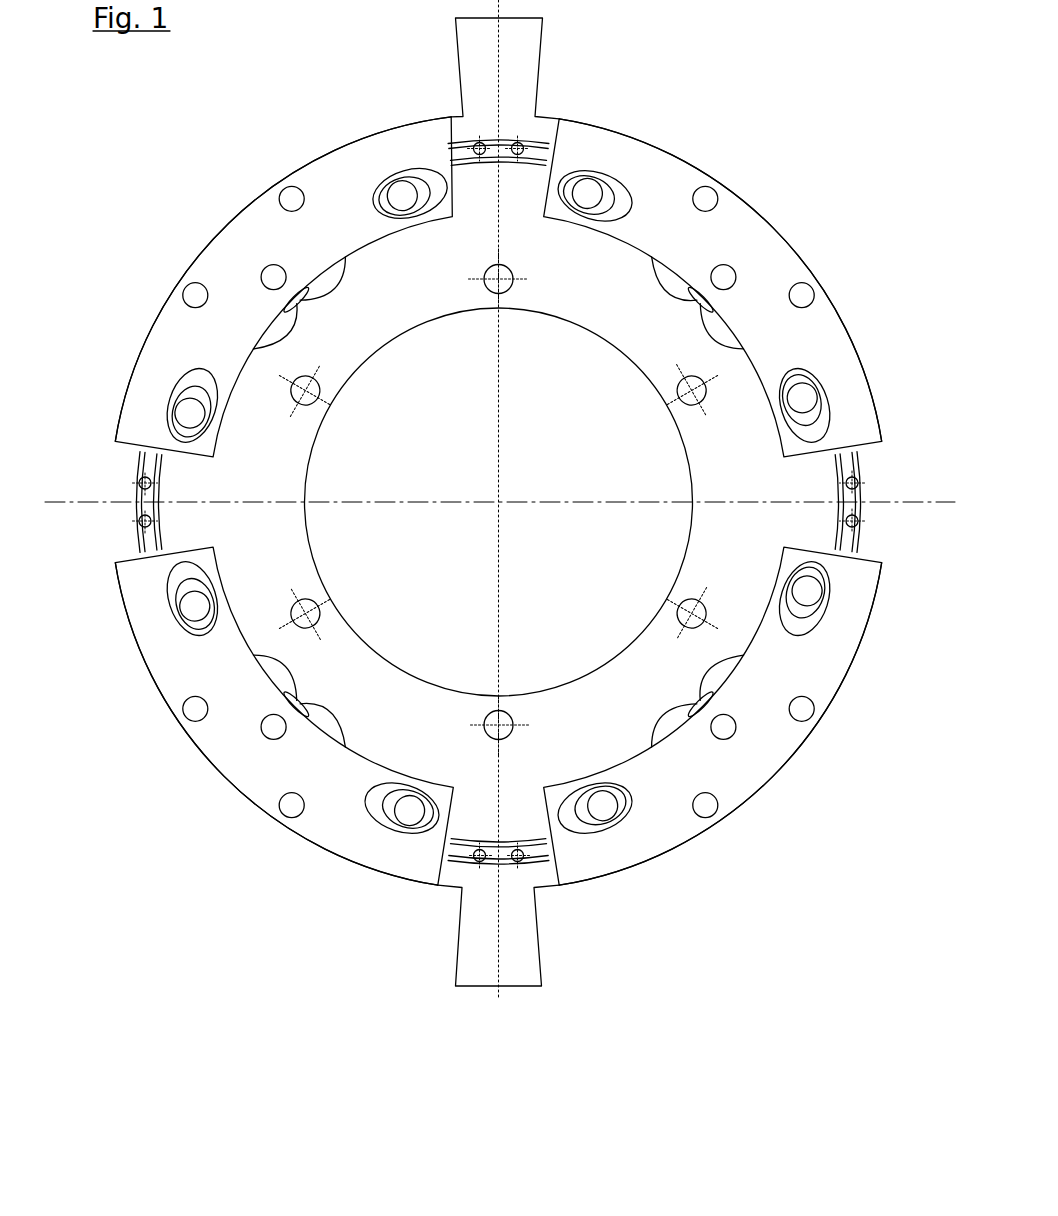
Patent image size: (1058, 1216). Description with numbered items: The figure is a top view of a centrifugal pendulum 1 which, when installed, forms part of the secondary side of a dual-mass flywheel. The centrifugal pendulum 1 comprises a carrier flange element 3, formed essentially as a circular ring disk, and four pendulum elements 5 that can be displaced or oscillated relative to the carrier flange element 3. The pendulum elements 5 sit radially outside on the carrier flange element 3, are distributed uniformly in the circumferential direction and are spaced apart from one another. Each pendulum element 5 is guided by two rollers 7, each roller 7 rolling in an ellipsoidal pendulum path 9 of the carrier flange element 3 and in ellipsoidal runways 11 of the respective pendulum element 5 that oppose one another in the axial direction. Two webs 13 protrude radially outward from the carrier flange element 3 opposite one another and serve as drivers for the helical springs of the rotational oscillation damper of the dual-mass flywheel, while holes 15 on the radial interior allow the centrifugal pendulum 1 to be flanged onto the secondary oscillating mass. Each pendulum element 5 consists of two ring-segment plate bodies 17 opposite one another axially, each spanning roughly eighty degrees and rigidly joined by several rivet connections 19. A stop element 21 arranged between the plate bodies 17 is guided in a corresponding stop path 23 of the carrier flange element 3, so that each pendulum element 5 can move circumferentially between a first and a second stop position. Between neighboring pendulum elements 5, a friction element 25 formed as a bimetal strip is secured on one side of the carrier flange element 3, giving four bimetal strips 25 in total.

The centrifugal pendulum 1 is at (208, 937).
The carrier flange element 3 is at (555, 712).
The pendulum element 5 is at (313, 188).
The roller 7 is at (803, 593).
The pendulum path 9 is at (828, 617).
The runway 11 is at (812, 640).
The web 13 is at (519, 63).
The hole 15 is at (317, 393).
The plate body 17 is at (835, 325).
The rivet connection 19 is at (710, 187).
The stop element 21 is at (305, 290).
The stop path 23 is at (290, 332).
The friction element 25 is at (452, 152).